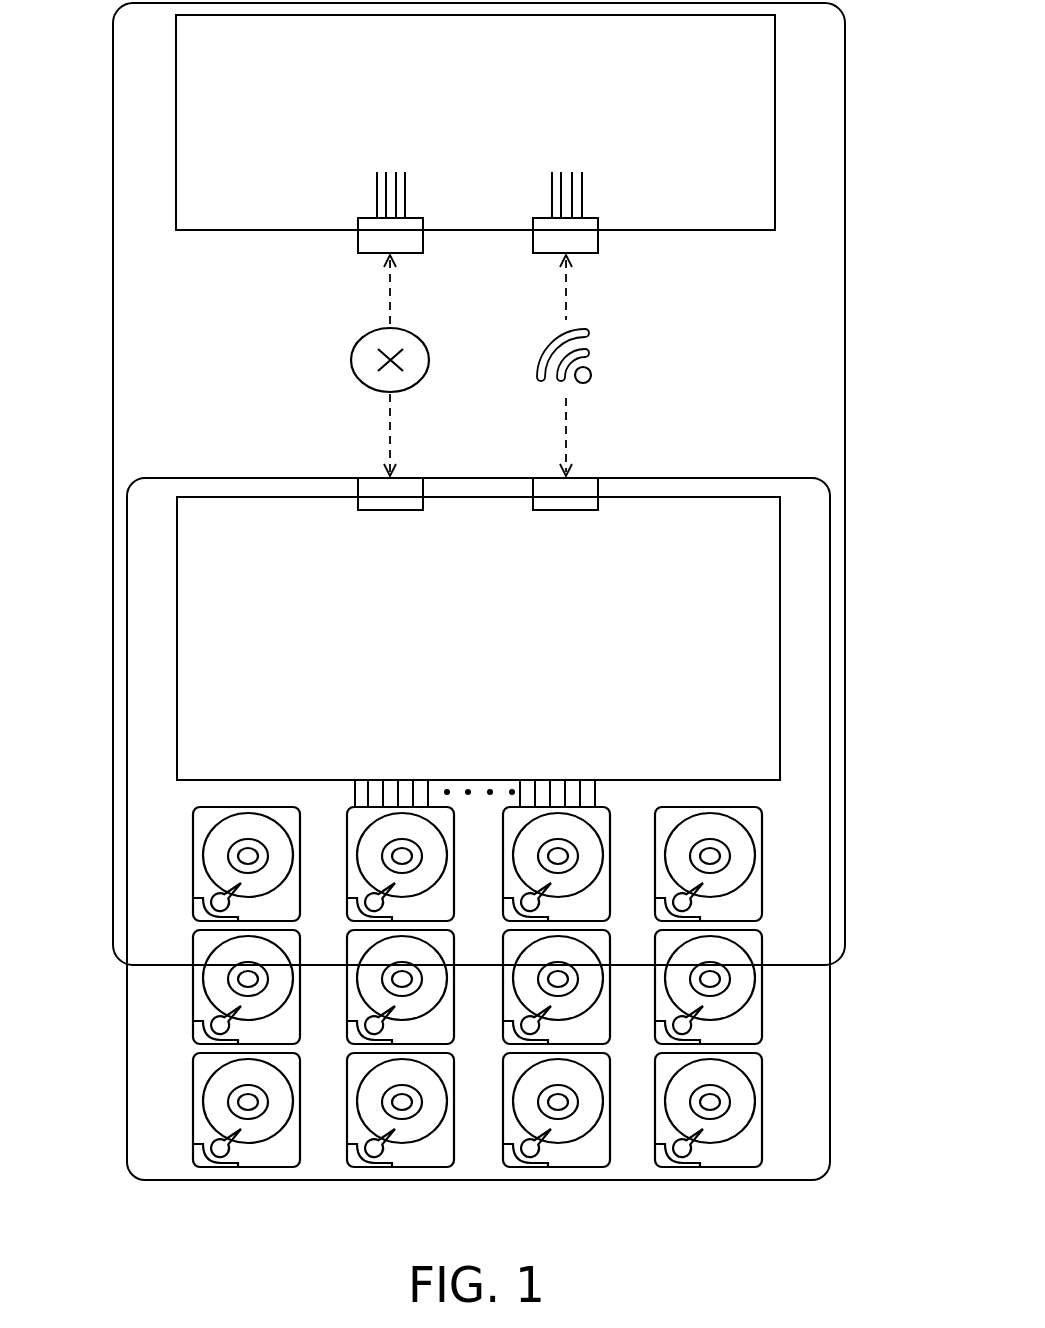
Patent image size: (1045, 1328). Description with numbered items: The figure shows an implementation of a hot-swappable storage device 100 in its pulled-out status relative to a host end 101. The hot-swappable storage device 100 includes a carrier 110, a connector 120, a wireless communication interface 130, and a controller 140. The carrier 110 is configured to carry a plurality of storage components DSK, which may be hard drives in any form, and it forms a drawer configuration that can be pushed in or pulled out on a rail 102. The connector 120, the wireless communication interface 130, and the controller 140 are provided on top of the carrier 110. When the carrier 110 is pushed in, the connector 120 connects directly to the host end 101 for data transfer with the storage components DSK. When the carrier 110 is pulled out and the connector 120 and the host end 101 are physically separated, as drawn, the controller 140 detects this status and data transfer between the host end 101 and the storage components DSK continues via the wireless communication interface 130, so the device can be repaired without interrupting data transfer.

The hot-swappable storage device 100 is at (486, 621).
The host end 101 is at (775, 122).
The rail 102 is at (845, 205).
The carrier 110 is at (830, 1065).
The connector 120 is at (372, 478).
The wireless communication interface 130 is at (585, 478).
The controller 140 is at (752, 640).
The storage components DSK is at (193, 865).